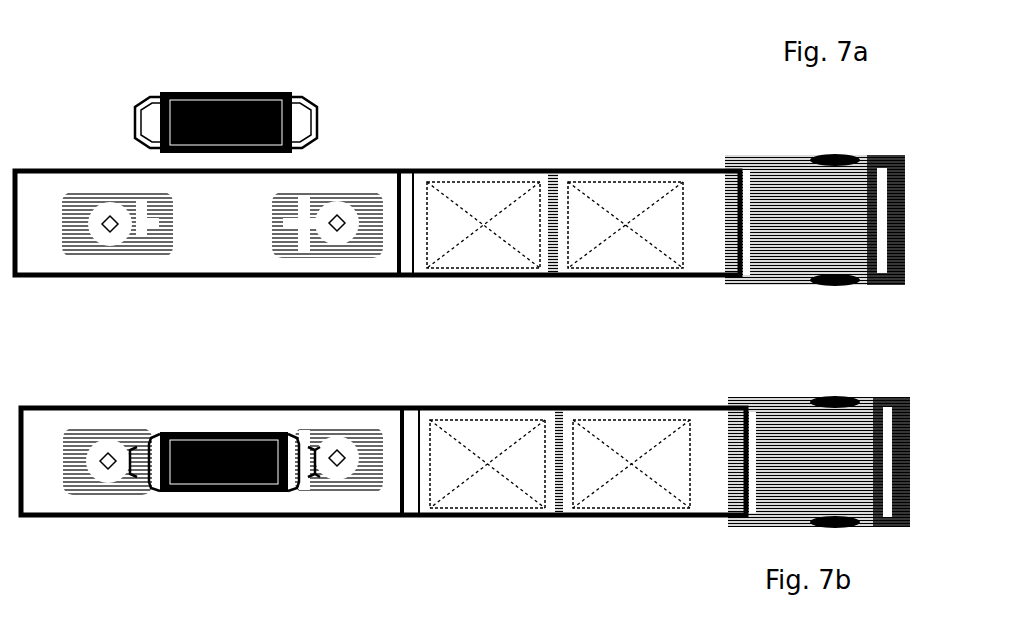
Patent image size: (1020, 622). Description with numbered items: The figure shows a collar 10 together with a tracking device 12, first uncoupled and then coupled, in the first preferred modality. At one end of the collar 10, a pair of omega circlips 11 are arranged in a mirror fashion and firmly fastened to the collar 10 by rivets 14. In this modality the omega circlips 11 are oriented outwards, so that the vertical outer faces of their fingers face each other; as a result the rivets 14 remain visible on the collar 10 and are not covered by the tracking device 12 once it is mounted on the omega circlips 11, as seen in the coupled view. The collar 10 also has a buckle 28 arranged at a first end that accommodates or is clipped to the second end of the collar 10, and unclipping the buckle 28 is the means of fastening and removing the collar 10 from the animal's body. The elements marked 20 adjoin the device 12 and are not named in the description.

In FIG. 7A, the collar 10 is at (713, 230).
In FIG. 7B, the collar 10 is at (713, 452).
In FIG. 7A, the omega circlips 11 is at (140, 244).
In FIG. 7B, the omega circlips 11 is at (142, 438).
In FIG. 7A, the tracking device 12 is at (212, 91).
In FIG. 7B, the tracking device 12 is at (207, 493).
In FIG. 7A, the rivets 14 is at (345, 237).
In FIG. 7B, the rivets 14 is at (348, 457).
In FIG. 7A, the clip / fastening element 20 is at (131, 122).
In FIG. 7B, the clip / fastening element 20 is at (319, 448).
In FIG. 7A, the buckle 28 is at (803, 255).
In FIG. 7B, the buckle 28 is at (803, 425).